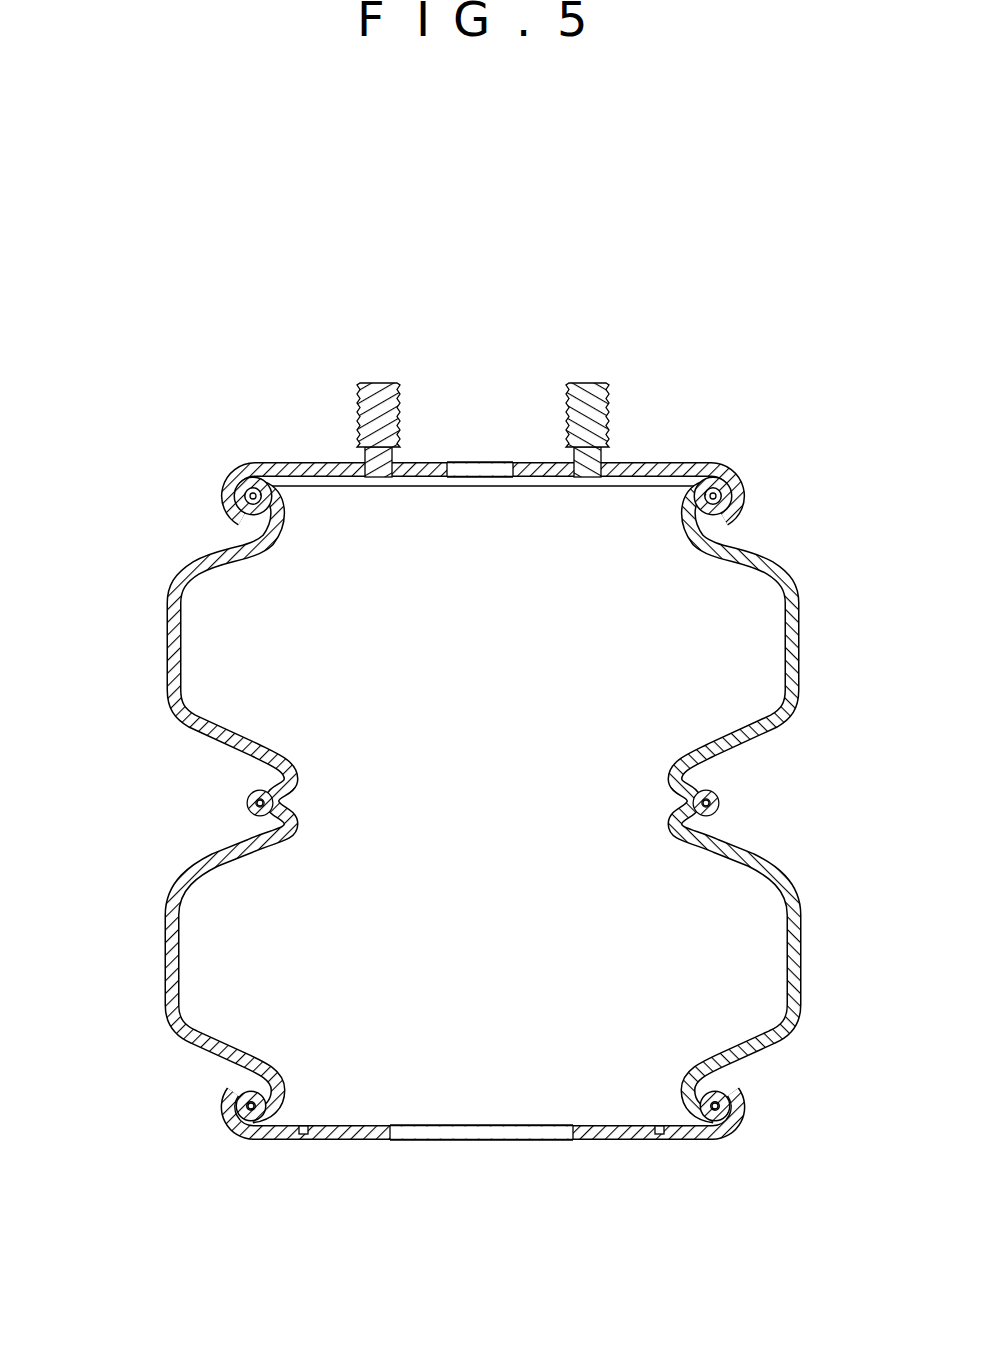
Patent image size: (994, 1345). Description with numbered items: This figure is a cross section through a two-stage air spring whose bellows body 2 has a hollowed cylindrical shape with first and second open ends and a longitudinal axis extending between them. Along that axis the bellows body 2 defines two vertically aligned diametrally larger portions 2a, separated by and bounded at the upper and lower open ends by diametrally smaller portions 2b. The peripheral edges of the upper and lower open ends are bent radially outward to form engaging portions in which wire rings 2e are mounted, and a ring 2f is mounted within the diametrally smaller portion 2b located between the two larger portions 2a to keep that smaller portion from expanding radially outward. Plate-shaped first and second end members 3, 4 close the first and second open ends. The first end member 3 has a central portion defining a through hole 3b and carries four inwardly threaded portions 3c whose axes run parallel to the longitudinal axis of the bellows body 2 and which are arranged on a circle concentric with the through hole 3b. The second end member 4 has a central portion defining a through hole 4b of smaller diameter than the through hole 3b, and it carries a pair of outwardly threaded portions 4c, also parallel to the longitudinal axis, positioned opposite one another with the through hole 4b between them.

The bellows body 2 is at (130, 620).
The diametrally larger portions 2a is at (225, 762).
The diametrally smaller portions 2b is at (217, 523).
The wire rings 2e is at (747, 485).
The ring 2f is at (718, 811).
The first end member 3 is at (228, 1124).
The through hole 3b is at (485, 1130).
The inwardly threaded portions 3c is at (302, 1134).
The second end member 4 is at (680, 462).
The through hole 4b is at (480, 470).
The outwardly threaded portions 4c is at (366, 383).